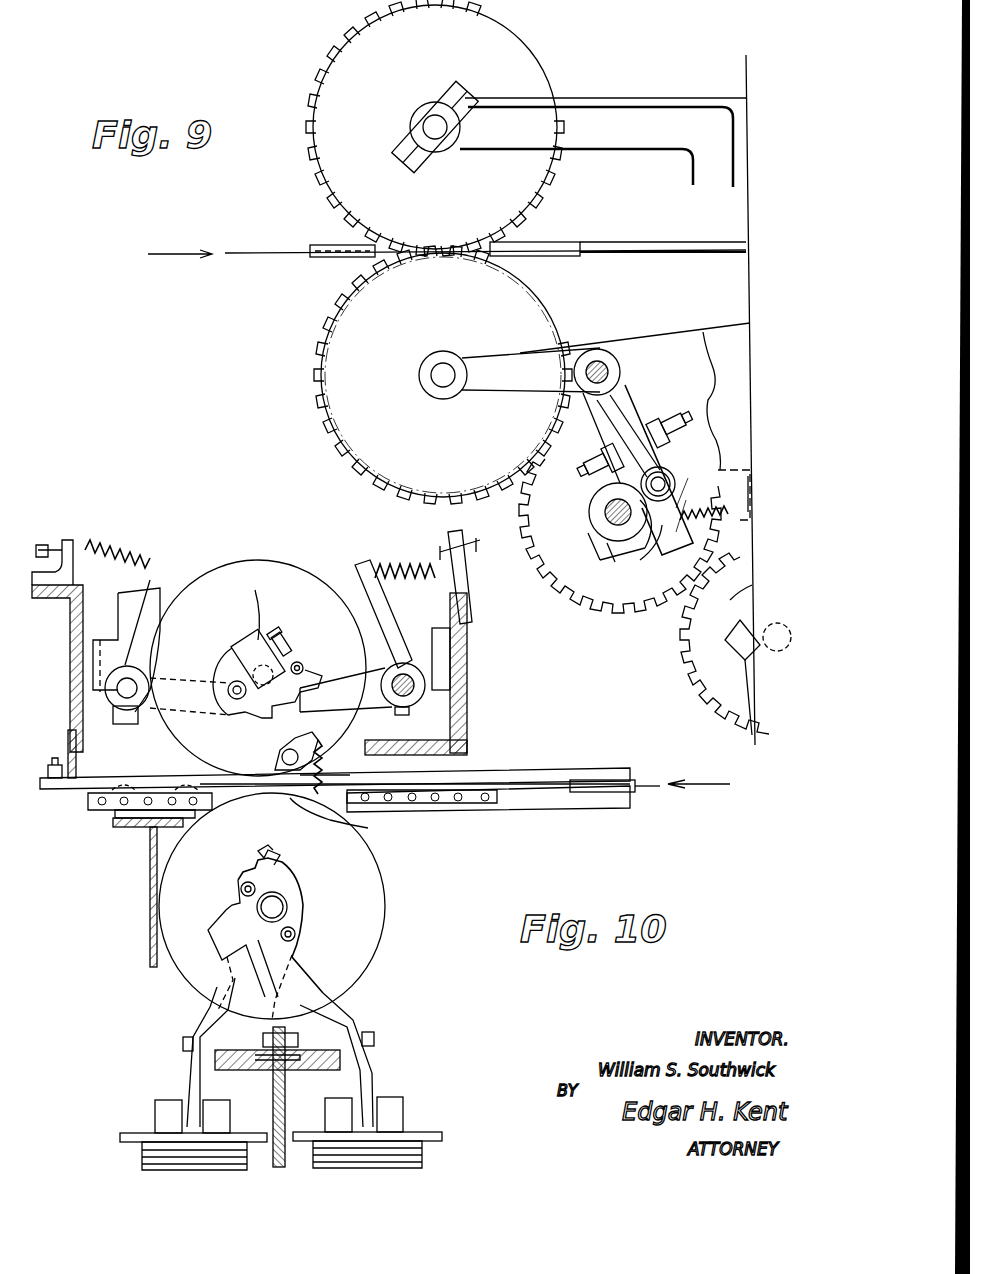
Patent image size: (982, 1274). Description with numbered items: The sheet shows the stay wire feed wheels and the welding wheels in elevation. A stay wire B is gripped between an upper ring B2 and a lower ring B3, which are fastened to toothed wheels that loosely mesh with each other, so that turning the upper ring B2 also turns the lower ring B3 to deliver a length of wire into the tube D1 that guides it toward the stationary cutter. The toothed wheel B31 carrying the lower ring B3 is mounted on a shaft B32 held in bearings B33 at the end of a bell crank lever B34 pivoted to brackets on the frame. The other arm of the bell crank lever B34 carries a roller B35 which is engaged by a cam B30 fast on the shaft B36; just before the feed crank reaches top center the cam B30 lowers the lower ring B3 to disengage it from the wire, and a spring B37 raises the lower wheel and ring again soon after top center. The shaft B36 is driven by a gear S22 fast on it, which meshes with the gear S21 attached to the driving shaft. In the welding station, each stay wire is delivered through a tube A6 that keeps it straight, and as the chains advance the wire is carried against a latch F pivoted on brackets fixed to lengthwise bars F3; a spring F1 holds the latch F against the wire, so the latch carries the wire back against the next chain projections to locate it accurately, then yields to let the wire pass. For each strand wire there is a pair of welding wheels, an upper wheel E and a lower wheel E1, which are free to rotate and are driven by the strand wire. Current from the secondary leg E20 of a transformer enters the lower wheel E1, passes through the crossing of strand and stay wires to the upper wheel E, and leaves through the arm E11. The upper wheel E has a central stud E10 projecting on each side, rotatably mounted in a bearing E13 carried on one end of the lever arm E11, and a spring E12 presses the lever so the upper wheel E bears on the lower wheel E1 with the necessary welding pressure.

In FIG. 9, the upper ring B2 is at (332, 82).
In FIG. 9, the stay wire B is at (264, 253).
In FIG. 9, the tube D1 is at (637, 252).
In FIG. 9, the toothed wheel B31 is at (335, 318).
In FIG. 9, the lower ring B3 is at (323, 378).
In FIG. 9, the shaft B32 is at (425, 380).
In FIG. 9, the bearings B33 is at (430, 397).
In FIG. 9, the bell crank lever B34 is at (532, 360).
In FIG. 9, the roller B35 is at (678, 482).
In FIG. 9, the shaft B36 is at (606, 513).
In FIG. 9, the spring B37 is at (740, 519).
In FIG. 9, the gear S22 is at (590, 596).
In FIG. 9, the cam B30 is at (645, 560).
In FIG. 9, the gear S21 is at (692, 650).
In FIG. 10, the bearing E13 is at (255, 590).
In FIG. 10, the spring E12 is at (385, 570).
In FIG. 10, the upper welding wheel E is at (258, 668).
In FIG. 10, the arm E11 is at (352, 682).
In FIG. 10, the central stud E10 is at (272, 718).
In FIG. 10, the spring F1 is at (345, 765).
In FIG. 10, the lengthwise bars F3 is at (534, 776).
In FIG. 10, the tube A6 is at (632, 788).
In FIG. 10, the lower welding wheel E1 is at (259, 931).
In FIG. 10, the latch F is at (355, 826).
In FIG. 10, the secondary leg E20 is at (365, 1076).